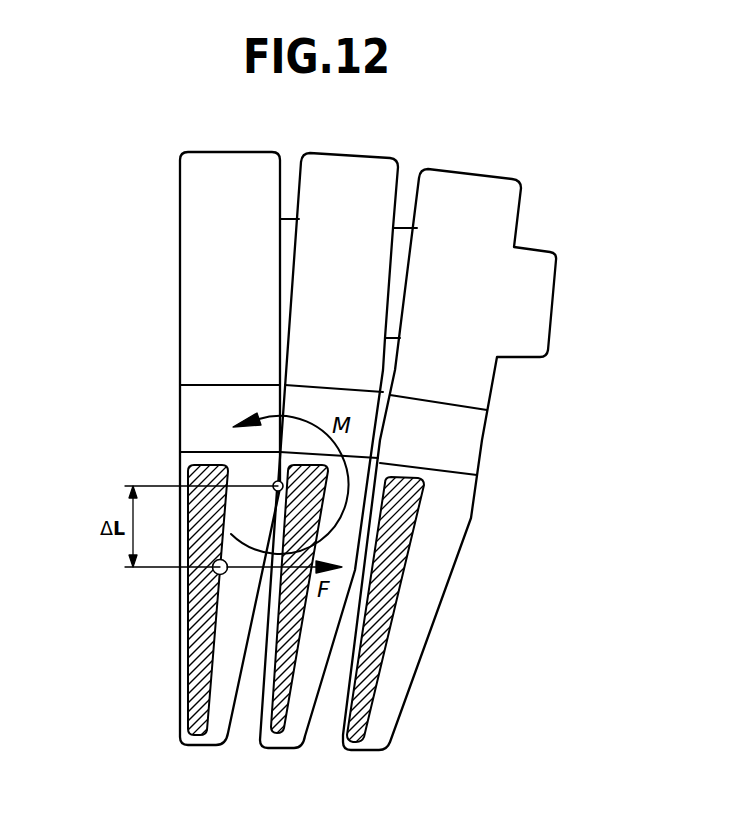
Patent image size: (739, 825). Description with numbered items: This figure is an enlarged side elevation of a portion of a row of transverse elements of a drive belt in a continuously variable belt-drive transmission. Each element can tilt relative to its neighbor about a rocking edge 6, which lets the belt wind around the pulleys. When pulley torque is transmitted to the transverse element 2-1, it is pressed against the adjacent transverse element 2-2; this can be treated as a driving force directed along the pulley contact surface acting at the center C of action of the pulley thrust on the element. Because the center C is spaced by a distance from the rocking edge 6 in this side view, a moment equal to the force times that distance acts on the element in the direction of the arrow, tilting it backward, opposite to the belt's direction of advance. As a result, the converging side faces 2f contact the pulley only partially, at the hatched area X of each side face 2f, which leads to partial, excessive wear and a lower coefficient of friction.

The transverse element 2-1 is at (180, 202).
The adjacent transverse element 2-2 is at (348, 155).
The side face 2f is at (220, 650).
The rocking edge 6 is at (273, 483).
The hatched area X is at (188, 477).
The center of action of the thrust C is at (220, 575).